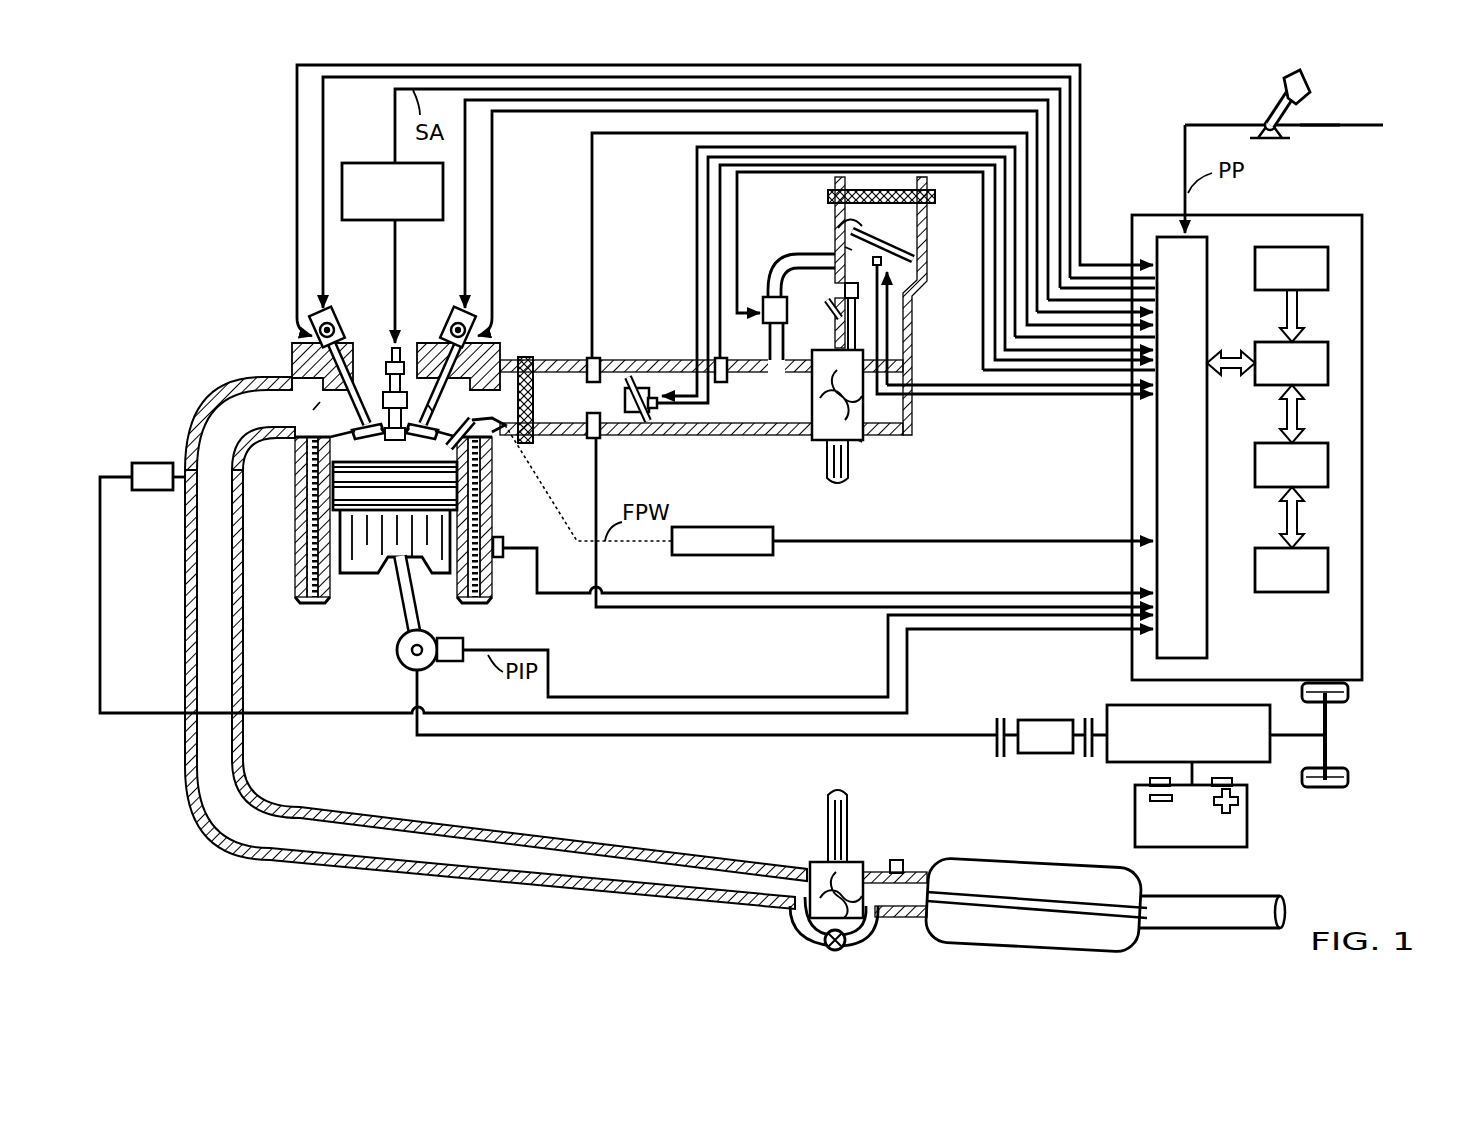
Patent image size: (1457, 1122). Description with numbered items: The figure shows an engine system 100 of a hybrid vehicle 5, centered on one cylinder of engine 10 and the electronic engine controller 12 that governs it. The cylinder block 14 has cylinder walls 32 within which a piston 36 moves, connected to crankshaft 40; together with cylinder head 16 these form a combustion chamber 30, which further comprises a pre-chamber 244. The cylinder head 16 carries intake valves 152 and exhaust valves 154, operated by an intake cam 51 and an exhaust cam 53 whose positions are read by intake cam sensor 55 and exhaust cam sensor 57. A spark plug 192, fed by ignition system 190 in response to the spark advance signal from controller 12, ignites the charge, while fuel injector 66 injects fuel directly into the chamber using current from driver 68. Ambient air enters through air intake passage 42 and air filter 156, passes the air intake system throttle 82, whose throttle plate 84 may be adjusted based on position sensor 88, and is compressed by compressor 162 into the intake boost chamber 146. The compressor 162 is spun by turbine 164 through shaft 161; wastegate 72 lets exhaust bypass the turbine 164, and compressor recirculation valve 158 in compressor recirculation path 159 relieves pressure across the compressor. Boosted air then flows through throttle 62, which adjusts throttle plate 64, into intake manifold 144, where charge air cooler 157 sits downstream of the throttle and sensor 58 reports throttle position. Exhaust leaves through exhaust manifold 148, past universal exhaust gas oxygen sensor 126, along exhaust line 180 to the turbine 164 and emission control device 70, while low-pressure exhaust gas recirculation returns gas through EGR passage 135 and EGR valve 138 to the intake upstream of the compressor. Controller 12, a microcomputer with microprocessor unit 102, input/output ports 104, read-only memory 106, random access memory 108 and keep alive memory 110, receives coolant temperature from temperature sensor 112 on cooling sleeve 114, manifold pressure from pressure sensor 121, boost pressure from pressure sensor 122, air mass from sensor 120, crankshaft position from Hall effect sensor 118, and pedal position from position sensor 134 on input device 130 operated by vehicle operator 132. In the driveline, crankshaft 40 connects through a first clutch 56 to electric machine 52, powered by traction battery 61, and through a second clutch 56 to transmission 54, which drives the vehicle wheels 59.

The engine system 100 is at (148, 128).
The engine 10 is at (222, 276).
The electronic engine controller 12 is at (1362, 216).
The microprocessor unit 102 is at (1330, 365).
The input/output ports 104 is at (1210, 246).
The read-only memory 106 is at (1330, 266).
The random access memory 108 is at (1330, 466).
The keep alive memory 110 is at (1330, 570).
The input device 130 is at (1250, 106).
The vehicle operator 132 is at (1312, 82).
The position sensor 134 is at (1330, 125).
The ignition system 190 is at (382, 163).
The spark plug 192 is at (398, 345).
The exhaust cam 53 is at (327, 310).
The intake cam 51 is at (460, 310).
The exhaust cam sensor 57 is at (312, 330).
The intake cam sensor 55 is at (470, 330).
The exhaust valves 154 is at (313, 410).
The intake valves 152 is at (433, 412).
The cylinder head 16 is at (505, 348).
The exhaust manifold 148 is at (279, 418).
The pre-chamber 244 is at (393, 442).
The fuel injector 66 is at (480, 445).
The temperature sensor 112 is at (503, 545).
The cooling sleeve 114 is at (490, 593).
The cylinder block 14 is at (288, 496).
The combustion chamber 30 is at (300, 553).
The cylinder walls 32 is at (325, 597).
The piston 36 is at (385, 595).
The crankshaft 40 is at (400, 660).
The Hall effect sensor 118 is at (443, 662).
The UEGO sensor 126 is at (132, 465).
The pressure sensor 121 is at (593, 358).
The throttle 62 is at (634, 385).
The throttle plate 64 is at (657, 395).
The pressure sensor 122 is at (727, 362).
The intake manifold 144 is at (584, 415).
The intake boost chamber 146 is at (745, 415).
The charge air cooler 157 is at (535, 440).
The air mass sensor 120 is at (598, 440).
The throttle position sensor 58 is at (652, 420).
The EGR passage 135 is at (832, 315).
The EGR valve 138 is at (845, 292).
The compressor recirculation path 159 is at (835, 308).
The compressor recirculation valve 158 is at (766, 298).
The air intake system throttle 82 is at (847, 247).
The throttle plate 84 is at (838, 224).
The position sensor 88 is at (838, 248).
The air intake passage 42 is at (892, 228).
The air filter 156 is at (935, 196).
The compressor 162 is at (858, 440).
The shaft 161 is at (850, 468).
The driver 68 is at (760, 527).
The clutches 56 is at (997, 722).
The electric machine 52 is at (1043, 754).
The transmission 54 is at (1245, 762).
The vehicle 5 is at (1378, 712).
The vehicle wheels 59 is at (1322, 788).
The traction battery 61 is at (1192, 847).
The turbine 164 is at (812, 862).
The wastegate 72 is at (820, 940).
The emission control device 70 is at (930, 930).
The exhaust pipe 180 is at (453, 897).